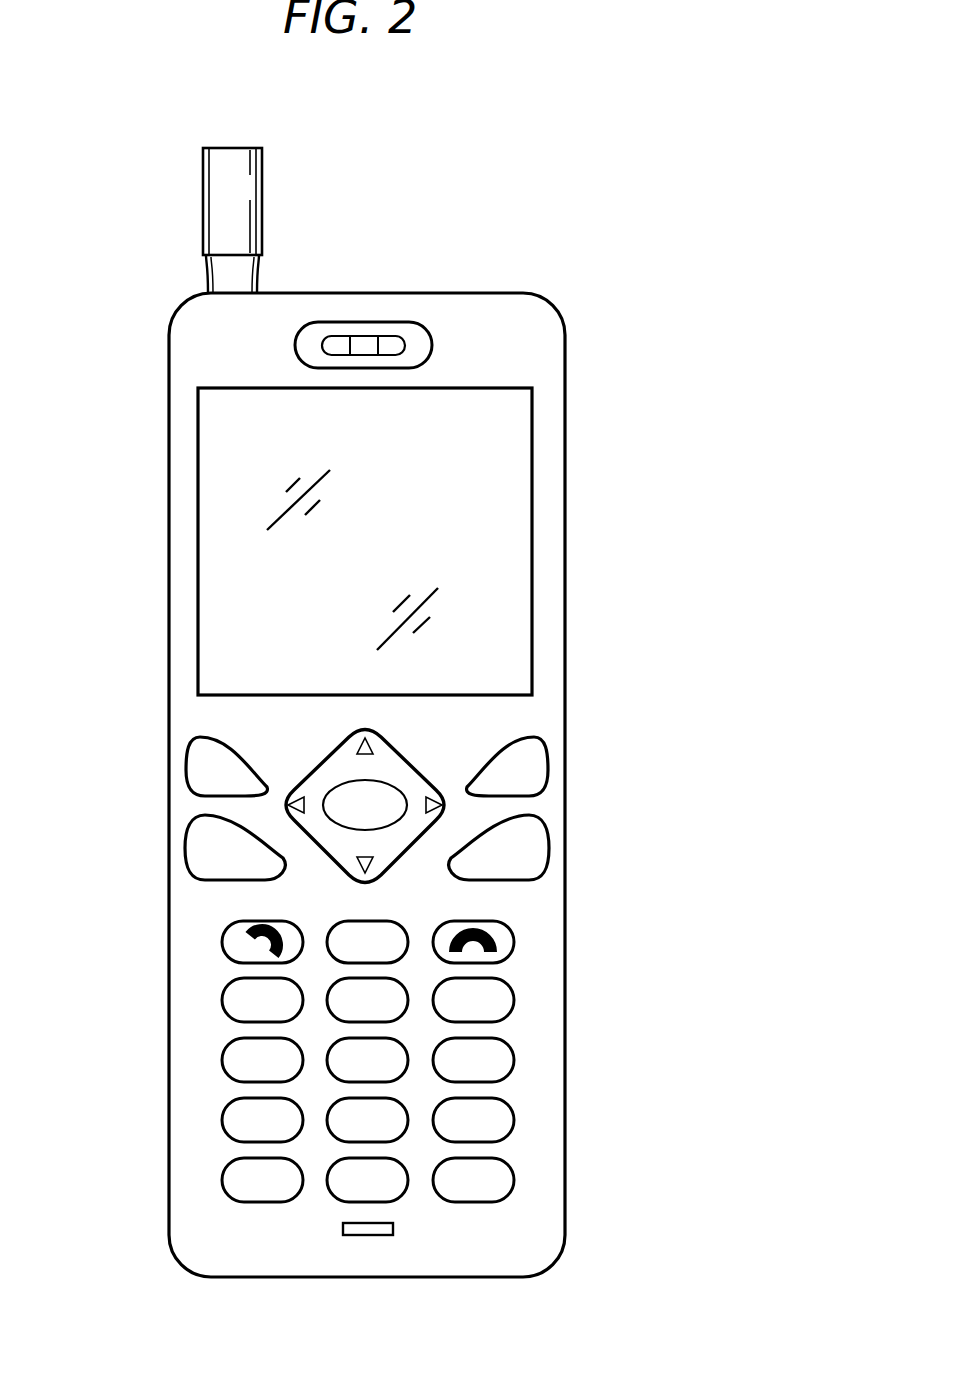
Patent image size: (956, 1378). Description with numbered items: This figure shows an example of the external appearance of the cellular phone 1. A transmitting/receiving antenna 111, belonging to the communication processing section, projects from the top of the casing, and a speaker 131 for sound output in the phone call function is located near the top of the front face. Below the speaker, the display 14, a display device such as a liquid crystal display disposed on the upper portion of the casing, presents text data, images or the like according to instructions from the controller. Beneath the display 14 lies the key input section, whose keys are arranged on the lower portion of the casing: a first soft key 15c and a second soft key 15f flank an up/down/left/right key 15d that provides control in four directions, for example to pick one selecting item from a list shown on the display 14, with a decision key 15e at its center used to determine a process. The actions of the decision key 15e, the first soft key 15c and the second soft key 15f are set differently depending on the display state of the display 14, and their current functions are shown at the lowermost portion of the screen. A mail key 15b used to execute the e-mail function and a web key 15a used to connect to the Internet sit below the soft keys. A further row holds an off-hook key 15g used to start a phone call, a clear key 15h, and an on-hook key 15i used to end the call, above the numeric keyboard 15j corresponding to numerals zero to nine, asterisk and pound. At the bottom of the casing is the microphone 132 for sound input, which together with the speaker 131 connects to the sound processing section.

The cellular phone 1 is at (108, 147).
The transmitting/receiving antenna 111 is at (237, 148).
The speaker 131 is at (369, 334).
The display 14 is at (488, 497).
The web key 15a is at (526, 836).
The mail key 15b is at (210, 833).
The soft 1 key 15c is at (207, 770).
The up/down/left/right key 15d is at (323, 776).
The decision key 15e is at (377, 789).
The soft 2 key 15f is at (527, 767).
The off-hook key 15g is at (235, 942).
The clear key 15h is at (378, 926).
The on-hook key 15i is at (490, 938).
The numeric keyboard 15j is at (198, 1061).
The microphone 132 is at (376, 1237).